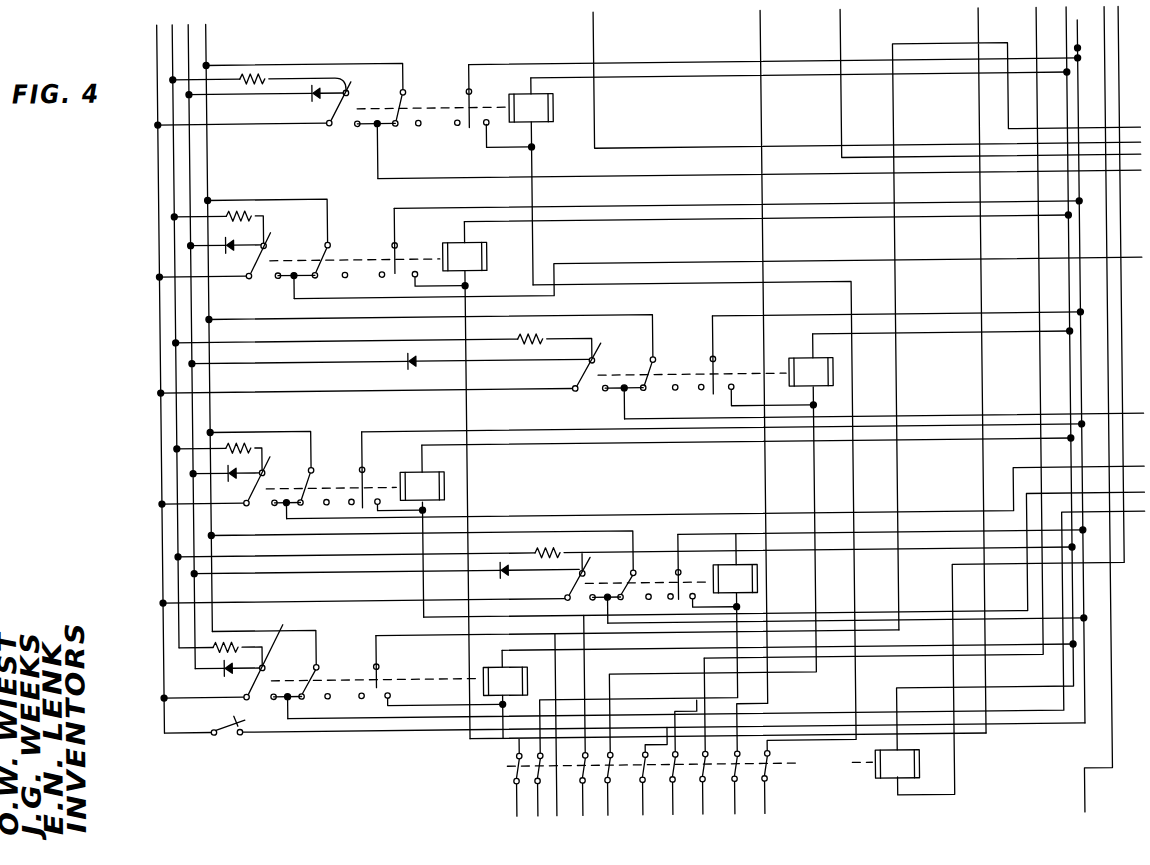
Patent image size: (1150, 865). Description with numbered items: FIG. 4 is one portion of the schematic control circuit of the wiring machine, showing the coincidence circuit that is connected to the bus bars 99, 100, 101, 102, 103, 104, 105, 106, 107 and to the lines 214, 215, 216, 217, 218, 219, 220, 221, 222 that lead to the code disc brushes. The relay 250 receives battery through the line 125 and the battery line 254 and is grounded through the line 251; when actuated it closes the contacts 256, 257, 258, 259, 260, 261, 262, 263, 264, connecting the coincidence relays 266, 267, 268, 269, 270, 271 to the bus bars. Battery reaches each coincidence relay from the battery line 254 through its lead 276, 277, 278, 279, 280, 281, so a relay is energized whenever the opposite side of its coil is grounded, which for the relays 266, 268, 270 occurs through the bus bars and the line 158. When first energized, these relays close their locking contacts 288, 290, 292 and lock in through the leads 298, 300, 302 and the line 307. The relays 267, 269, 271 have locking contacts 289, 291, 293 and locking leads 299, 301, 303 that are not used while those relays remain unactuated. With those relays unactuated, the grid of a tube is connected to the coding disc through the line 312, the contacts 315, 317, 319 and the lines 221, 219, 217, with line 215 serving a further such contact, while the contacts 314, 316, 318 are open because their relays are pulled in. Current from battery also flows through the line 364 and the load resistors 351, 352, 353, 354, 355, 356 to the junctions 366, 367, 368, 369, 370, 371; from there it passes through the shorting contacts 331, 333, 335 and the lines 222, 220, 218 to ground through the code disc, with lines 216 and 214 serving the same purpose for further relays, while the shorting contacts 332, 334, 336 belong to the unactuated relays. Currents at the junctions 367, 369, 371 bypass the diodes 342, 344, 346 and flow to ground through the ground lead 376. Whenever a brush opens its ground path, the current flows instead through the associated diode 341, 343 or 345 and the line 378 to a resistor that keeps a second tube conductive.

The bus bar 99 is at (577, 715).
The bus bar 100 is at (512, 806).
The bus bar 101 is at (574, 787).
The bus bar 102 is at (623, 783).
The bus bar 103 is at (656, 770).
The bus bar 104 is at (686, 757).
The bus bar 105 is at (1037, 86).
The bus bar 106 is at (761, 50).
The bus bar 107 is at (804, 443).
The line 125 is at (890, 298).
The line 158 is at (1106, 66).
The line 214 is at (965, 118).
The line 215 is at (594, 56).
The line 216 is at (841, 53).
The line 217 is at (480, 176).
The line 218 is at (290, 297).
The line 219 is at (616, 412).
The line 220 is at (330, 541).
The line 221 is at (664, 628).
The line 222 is at (338, 722).
The relay 250 is at (878, 788).
The line 251 is at (1116, 91).
The battery line 254 is at (1067, 33).
The contacts 256 is at (508, 774).
The contacts 257 is at (506, 786).
The contacts 258 is at (510, 798).
The contacts 259 is at (658, 752).
The contacts 260 is at (682, 718).
The contacts 261 is at (694, 700).
The contacts 262 is at (762, 816).
The contacts 263 is at (770, 798).
The contacts 264 is at (778, 782).
The coincidence relay 266 is at (504, 676).
The coincidence relay 267 is at (752, 586).
The coincidence relay 268 is at (412, 482).
The coincidence relay 269 is at (802, 368).
The coincidence relay 270 is at (462, 252).
The coincidence relay 271 is at (533, 136).
The lead 276 is at (908, 653).
The lead 277 is at (874, 563).
The lead 278 is at (706, 456).
The lead 279 is at (939, 345).
The lead 280 is at (608, 228).
The lead 281 is at (694, 87).
The locking contacts 288 is at (368, 668).
The locking contacts 289 is at (688, 570).
The locking contacts 290 is at (354, 473).
The locking contacts 291 is at (706, 368).
The locking contacts 292 is at (382, 253).
The locking contacts 293 is at (459, 102).
The locking lead 298 is at (422, 642).
The locking lead 299 is at (696, 534).
The locking lead 300 is at (426, 430).
The locking lead 301 is at (736, 320).
The locking lead 302 is at (420, 208).
The locking lead 303 is at (529, 67).
The line 307 is at (1030, 300).
The line 312 is at (194, 62).
The contacts 314 is at (330, 654).
The contacts 315 is at (616, 578).
The contacts 316 is at (294, 481).
The contacts 317 is at (644, 369).
The contacts 318 is at (310, 253).
The contacts 319 is at (384, 102).
The shorting contacts 331 is at (258, 725).
The shorting contacts 332 is at (559, 598).
The shorting contacts 333 is at (250, 508).
The shorting contacts 334 is at (572, 388).
The shorting contacts 335 is at (216, 271).
The shorting contacts 336 is at (328, 126).
The diode 341 is at (224, 678).
The diode 342 is at (500, 566).
The diode 343 is at (220, 476).
The diode 344 is at (422, 366).
The diode 345 is at (218, 242).
The diode 346 is at (318, 100).
The load resistor 351 is at (236, 644).
The load resistor 352 is at (552, 544).
The load resistor 353 is at (230, 444).
The load resistor 354 is at (518, 342).
The load resistor 355 is at (230, 210).
The load resistor 356 is at (254, 74).
The line 364 is at (168, 44).
The junction 366 is at (286, 652).
The junction 367 is at (584, 559).
The junction 368 is at (258, 452).
The junction 369 is at (596, 356).
The junction 370 is at (288, 197).
The junction 371 is at (348, 74).
The ground lead 376 is at (157, 33).
The line 378 is at (145, 424).